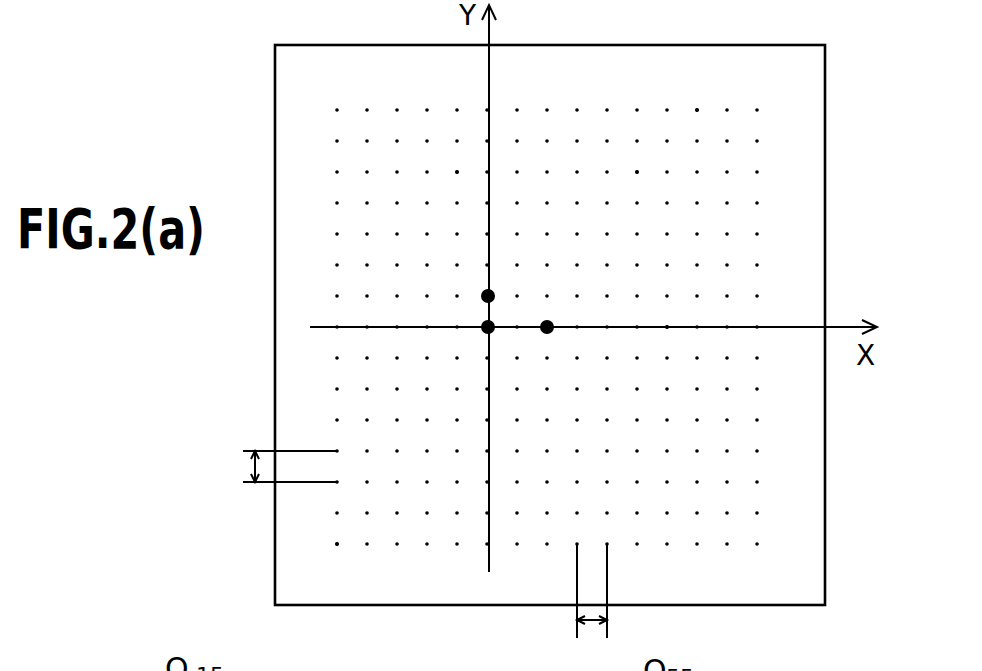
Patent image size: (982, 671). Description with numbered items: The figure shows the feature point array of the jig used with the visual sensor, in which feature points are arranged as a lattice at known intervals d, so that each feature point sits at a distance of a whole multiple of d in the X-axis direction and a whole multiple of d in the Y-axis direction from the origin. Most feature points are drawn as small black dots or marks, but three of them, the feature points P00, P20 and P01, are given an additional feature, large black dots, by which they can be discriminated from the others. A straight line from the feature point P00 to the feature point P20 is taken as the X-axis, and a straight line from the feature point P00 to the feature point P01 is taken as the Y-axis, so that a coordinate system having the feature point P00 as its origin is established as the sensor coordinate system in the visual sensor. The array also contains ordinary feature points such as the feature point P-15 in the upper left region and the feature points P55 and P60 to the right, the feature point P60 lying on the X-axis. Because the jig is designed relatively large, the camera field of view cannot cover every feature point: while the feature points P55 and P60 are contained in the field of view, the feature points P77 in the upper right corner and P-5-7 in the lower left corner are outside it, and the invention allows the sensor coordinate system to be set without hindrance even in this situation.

The feature point P77 is at (699, 111).
The feature point P55 is at (635, 173).
The feature point P60 is at (668, 327).
The feature point P20 is at (547, 327).
The feature point P01 is at (481, 297).
The feature point P00 is at (482, 330).
The feature point P-15 is at (459, 172).
The feature point P-5-7 is at (337, 544).
The interval d is at (416, 557).